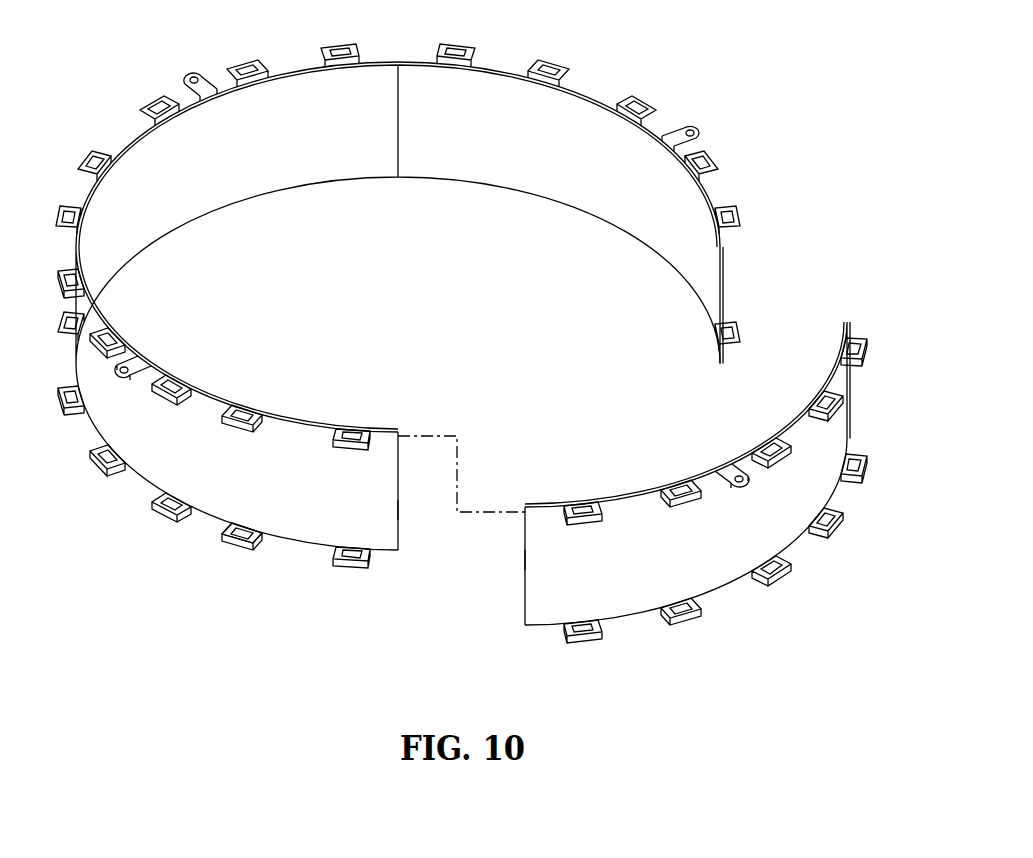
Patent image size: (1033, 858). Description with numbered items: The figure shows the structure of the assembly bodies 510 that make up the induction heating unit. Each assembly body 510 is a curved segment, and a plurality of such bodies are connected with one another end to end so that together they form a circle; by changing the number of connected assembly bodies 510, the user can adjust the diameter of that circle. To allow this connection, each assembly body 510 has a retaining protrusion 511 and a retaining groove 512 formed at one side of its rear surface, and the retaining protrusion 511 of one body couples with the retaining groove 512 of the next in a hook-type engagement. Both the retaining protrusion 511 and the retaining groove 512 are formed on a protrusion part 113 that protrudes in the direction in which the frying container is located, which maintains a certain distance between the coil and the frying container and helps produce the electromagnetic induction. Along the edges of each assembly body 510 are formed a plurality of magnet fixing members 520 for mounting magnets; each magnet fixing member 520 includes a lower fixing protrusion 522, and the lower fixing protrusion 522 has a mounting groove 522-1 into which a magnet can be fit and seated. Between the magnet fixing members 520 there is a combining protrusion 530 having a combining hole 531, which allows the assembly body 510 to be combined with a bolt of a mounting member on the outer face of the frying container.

The protrusion part 113 is at (525, 558).
The assembly body 510 is at (758, 620).
The retaining protrusion 511 is at (723, 251).
The retaining groove 512 is at (396, 433).
The magnet fixing member 520 is at (240, 545).
The lower fixing protrusion 522 is at (269, 545).
The mounting groove 522-1 is at (224, 518).
The combining protrusion 530 is at (714, 476).
The combining hole 531 is at (731, 484).